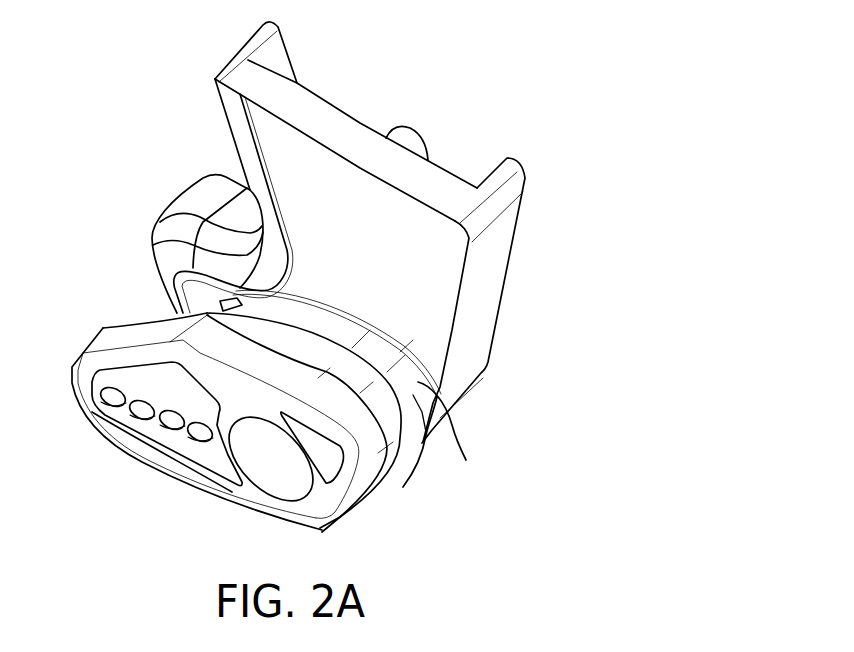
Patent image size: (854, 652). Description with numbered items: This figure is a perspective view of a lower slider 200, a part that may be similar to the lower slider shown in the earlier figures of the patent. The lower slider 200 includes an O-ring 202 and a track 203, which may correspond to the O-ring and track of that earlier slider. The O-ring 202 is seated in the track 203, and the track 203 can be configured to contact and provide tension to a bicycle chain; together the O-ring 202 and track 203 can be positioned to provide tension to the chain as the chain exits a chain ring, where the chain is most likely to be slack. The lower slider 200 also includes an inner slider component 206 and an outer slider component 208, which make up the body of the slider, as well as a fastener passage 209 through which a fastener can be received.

The lower slider 200 is at (422, 101).
The O-ring 202 is at (282, 383).
The track 203 is at (435, 400).
The inner slider component 206 is at (208, 452).
The outer slider component 208 is at (496, 282).
The fastener passage 209 is at (273, 489).